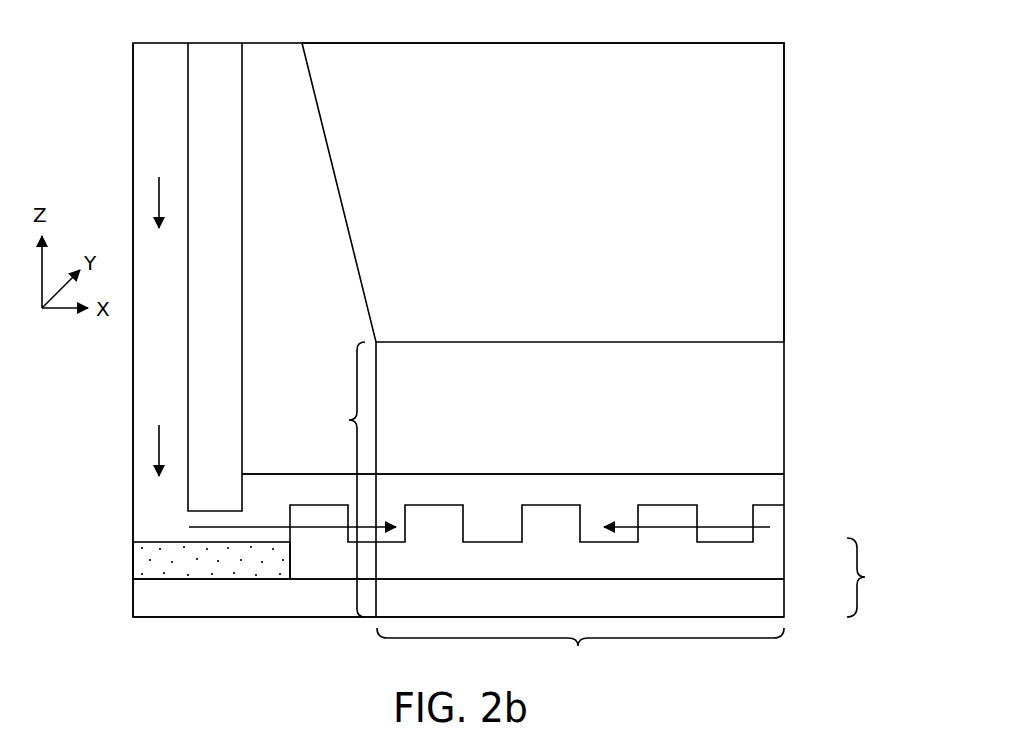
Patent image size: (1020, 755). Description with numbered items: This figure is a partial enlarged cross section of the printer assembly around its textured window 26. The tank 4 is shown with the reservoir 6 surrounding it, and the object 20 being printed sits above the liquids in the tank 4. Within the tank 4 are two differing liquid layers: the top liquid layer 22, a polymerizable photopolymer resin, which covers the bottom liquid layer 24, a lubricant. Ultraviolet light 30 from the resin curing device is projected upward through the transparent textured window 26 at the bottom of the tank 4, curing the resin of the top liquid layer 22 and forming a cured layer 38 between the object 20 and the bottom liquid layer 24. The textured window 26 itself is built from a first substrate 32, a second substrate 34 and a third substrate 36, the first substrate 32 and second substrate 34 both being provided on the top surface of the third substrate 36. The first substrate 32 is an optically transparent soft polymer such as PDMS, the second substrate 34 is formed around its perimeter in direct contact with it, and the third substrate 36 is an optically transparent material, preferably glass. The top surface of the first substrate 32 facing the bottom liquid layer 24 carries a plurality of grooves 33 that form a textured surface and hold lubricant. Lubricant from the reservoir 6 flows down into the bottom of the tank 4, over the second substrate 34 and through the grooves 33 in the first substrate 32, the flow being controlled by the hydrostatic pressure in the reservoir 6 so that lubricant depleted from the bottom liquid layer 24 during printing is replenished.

The tank 4 is at (215, 96).
The reservoir 6 is at (158, 98).
The object 20 is at (698, 186).
The top liquid layer 22 is at (290, 191).
The bottom liquid layer 24 is at (762, 491).
The textured window 26 is at (870, 577).
The ultraviolet light 30 is at (551, 507).
The first substrate 32 is at (762, 563).
The grooves 33 is at (755, 516).
The second substrate 34 is at (152, 562).
The third substrate 36 is at (760, 597).
The cured layer 38 is at (707, 409).